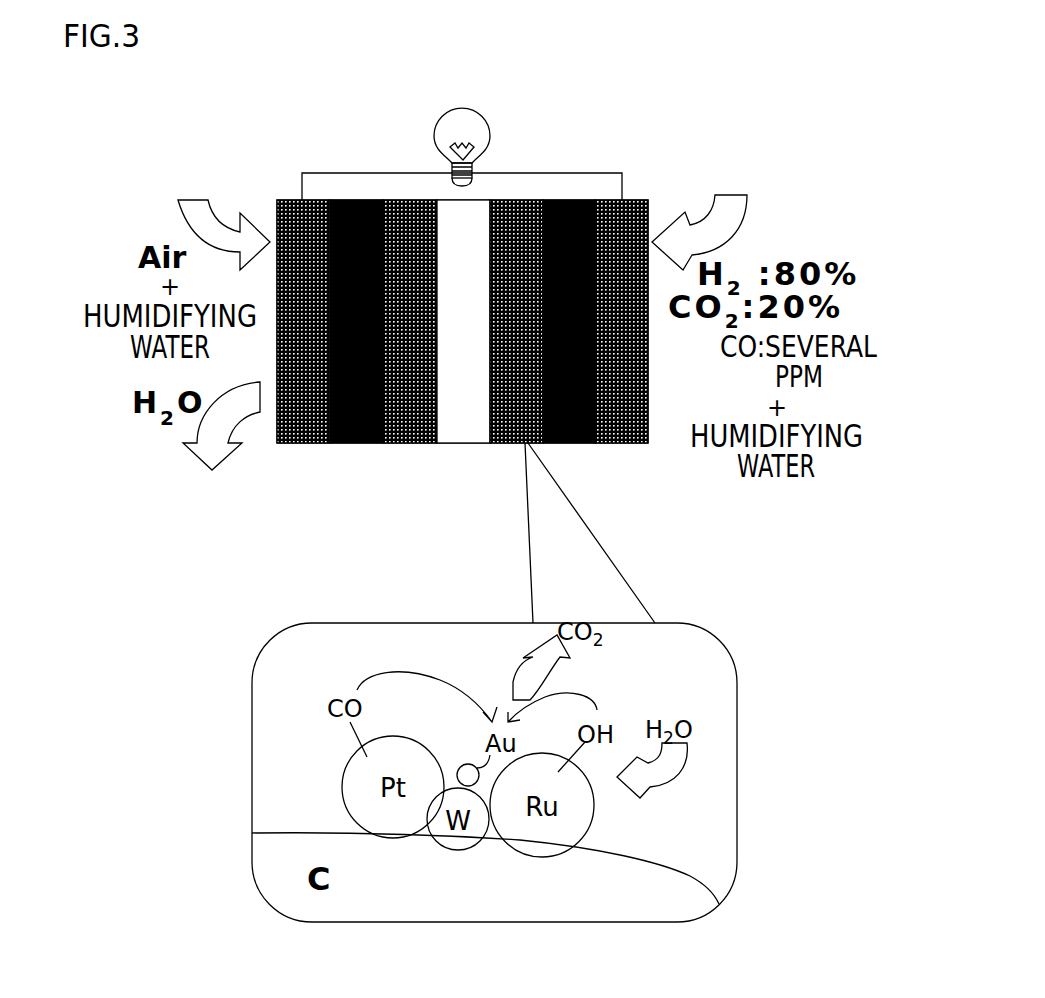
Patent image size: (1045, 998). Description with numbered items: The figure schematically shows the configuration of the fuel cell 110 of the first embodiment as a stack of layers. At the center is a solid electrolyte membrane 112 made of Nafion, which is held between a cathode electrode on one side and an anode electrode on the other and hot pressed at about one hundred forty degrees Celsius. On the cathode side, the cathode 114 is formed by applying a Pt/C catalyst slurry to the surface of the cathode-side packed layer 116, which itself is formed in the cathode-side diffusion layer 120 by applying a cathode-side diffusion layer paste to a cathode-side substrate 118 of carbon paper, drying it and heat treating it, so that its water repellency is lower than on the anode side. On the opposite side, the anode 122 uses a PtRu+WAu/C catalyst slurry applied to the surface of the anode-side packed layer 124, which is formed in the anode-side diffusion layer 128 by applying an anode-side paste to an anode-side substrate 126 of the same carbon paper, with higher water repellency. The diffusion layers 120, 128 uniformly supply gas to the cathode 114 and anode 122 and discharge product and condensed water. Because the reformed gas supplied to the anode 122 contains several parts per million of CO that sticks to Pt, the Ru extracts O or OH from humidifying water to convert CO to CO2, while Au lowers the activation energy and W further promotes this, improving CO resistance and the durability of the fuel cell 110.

The fuel cell 110 is at (598, 131).
The solid electrolyte membrane 112 is at (462, 415).
The cathode 114 is at (395, 443).
The cathode-side packed layer 116 is at (350, 443).
The cathode-side substrate 118 is at (302, 443).
The cathode-side diffusion layer 120 is at (355, 515).
The anode 122 is at (520, 443).
The anode-side packed layer 124 is at (570, 443).
The anode-side substrate 126 is at (625, 443).
The anode-side diffusion layer 128 is at (563, 515).